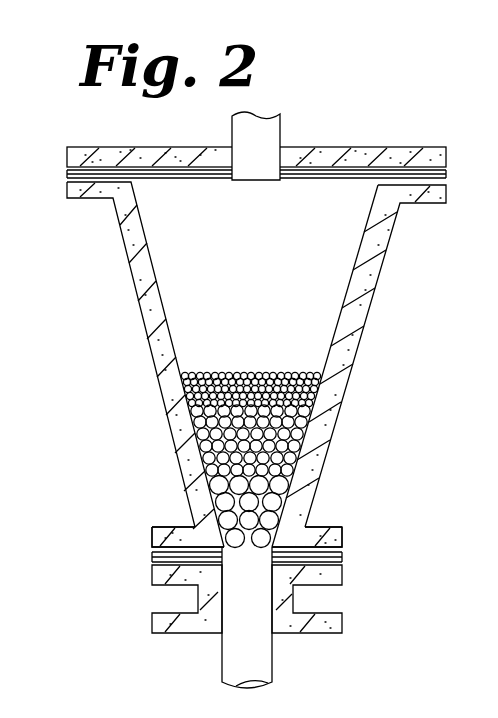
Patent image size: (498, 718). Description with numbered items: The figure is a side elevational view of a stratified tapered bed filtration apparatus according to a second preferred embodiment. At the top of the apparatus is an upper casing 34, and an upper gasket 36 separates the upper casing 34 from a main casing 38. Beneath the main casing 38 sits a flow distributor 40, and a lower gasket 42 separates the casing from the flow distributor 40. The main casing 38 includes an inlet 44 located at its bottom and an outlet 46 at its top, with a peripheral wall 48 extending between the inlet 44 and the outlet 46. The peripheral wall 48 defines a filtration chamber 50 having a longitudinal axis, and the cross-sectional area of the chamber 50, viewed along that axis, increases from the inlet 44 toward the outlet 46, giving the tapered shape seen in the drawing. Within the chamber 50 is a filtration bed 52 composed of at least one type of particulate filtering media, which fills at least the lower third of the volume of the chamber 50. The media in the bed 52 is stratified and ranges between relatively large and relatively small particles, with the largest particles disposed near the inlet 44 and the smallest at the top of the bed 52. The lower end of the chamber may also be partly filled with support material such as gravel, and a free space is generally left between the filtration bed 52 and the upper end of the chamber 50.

The upper casing 34 is at (352, 151).
The upper gasket 36 is at (67, 174).
The outlet 46 is at (258, 176).
The peripheral wall 48 is at (143, 306).
The main casing 38 is at (381, 274).
The filtration chamber 50 is at (345, 290).
The filtration bed 52 is at (270, 368).
The lower gasket 42 is at (152, 556).
The inlet 44 is at (230, 547).
The flow distributor 40 is at (342, 628).